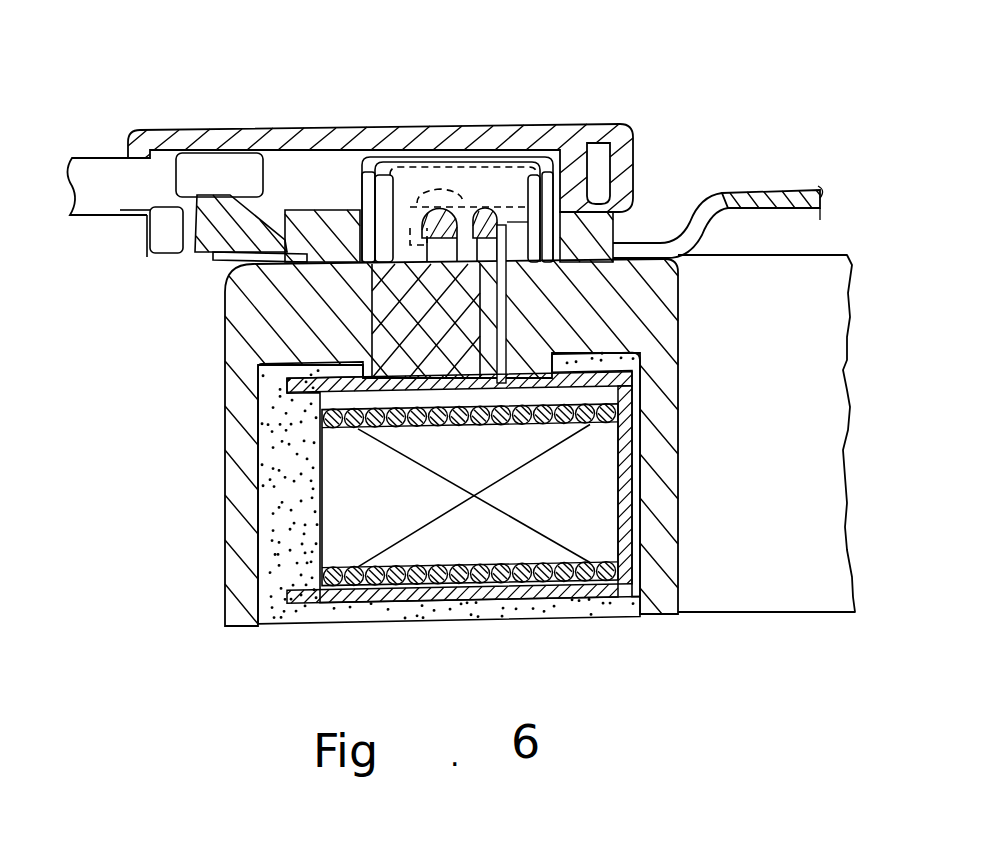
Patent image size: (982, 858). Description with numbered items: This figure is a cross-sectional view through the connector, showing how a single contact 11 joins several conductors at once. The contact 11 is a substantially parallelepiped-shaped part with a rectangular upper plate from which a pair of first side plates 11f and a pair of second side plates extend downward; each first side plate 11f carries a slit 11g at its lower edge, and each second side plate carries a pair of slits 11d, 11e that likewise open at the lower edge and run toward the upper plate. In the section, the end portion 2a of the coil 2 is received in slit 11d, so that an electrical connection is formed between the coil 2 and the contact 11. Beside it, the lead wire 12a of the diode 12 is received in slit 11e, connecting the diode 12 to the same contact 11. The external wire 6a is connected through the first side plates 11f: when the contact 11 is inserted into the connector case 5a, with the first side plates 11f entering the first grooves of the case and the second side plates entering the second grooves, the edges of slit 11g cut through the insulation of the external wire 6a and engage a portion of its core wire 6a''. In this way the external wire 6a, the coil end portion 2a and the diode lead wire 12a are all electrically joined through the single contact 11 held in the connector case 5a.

The coil 2 is at (350, 512).
The end portion of coil 2a is at (395, 175).
The connector case 5a is at (160, 254).
The external wire 6a is at (98, 145).
The core wire 6a'' is at (436, 155).
The contact 11 is at (407, 142).
The slit 11d is at (460, 370).
The slit 11e is at (400, 250).
The first side plate 11f is at (238, 130).
The slit 11g is at (175, 143).
The diode 12 is at (445, 189).
The lead wire 12a is at (430, 238).